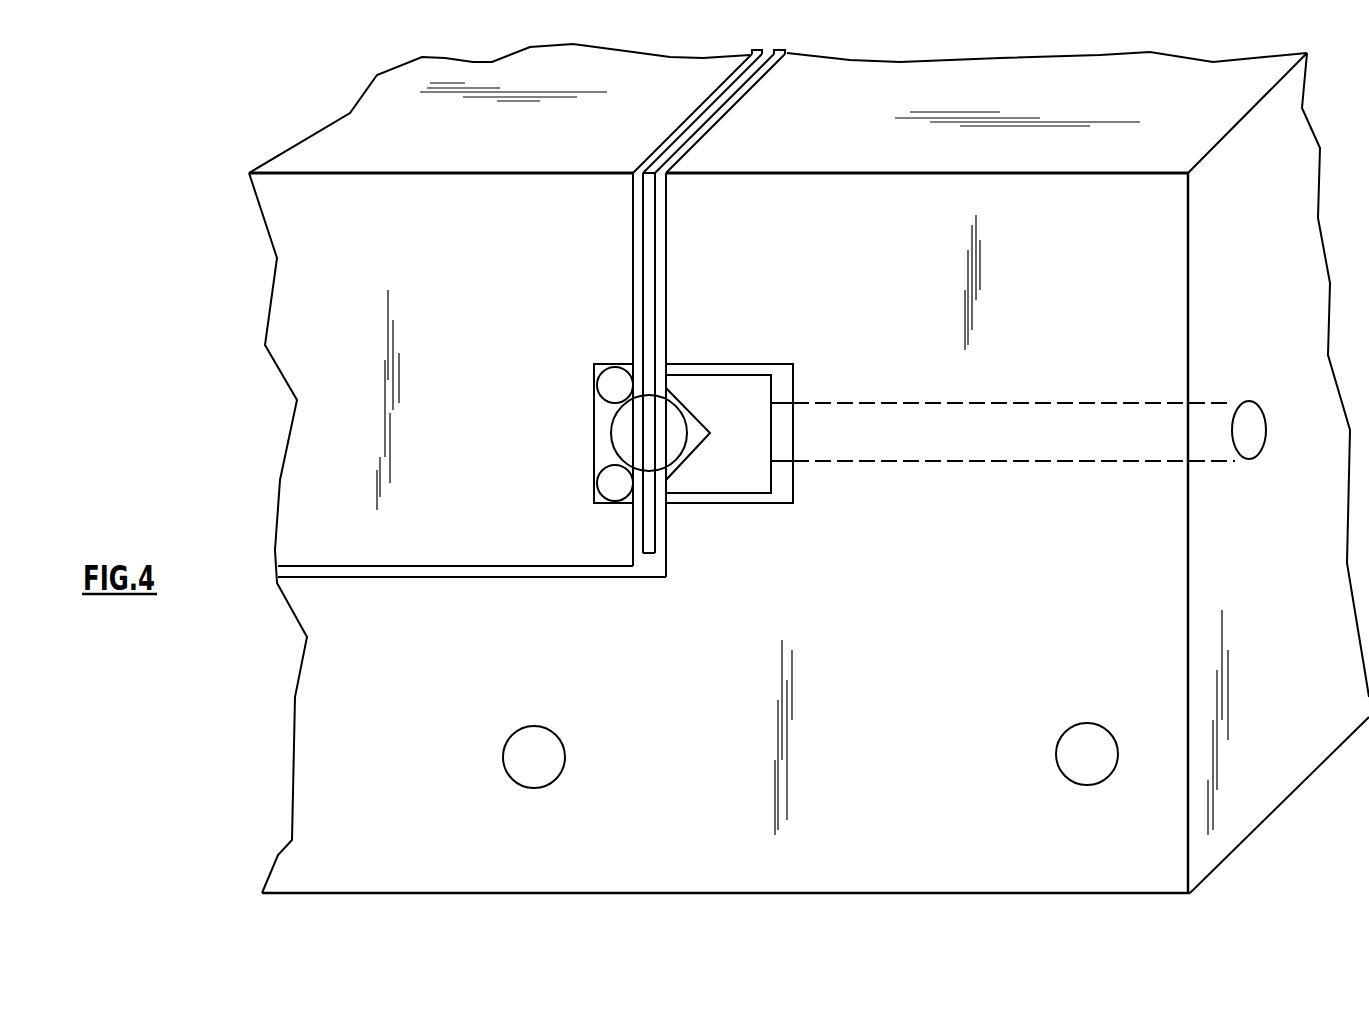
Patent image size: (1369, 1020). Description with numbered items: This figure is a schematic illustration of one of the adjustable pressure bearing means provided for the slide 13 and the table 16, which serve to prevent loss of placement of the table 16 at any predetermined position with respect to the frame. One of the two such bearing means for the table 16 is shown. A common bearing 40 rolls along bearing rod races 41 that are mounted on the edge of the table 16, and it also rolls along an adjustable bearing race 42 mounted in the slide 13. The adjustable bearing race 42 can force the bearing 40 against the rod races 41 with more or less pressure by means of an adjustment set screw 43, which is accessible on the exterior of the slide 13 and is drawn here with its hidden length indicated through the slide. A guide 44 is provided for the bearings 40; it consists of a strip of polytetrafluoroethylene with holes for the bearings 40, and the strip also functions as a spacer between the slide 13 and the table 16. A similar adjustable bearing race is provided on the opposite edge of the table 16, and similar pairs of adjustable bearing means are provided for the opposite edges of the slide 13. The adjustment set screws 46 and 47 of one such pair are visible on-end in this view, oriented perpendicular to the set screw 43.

The slide 13 is at (1079, 587).
The table 16 is at (532, 187).
The bearing 40 is at (668, 418).
The bearing rod races 41 is at (608, 467).
The adjustable bearing race 42 is at (753, 400).
The adjustment set screw 43 is at (940, 412).
The guide 44 is at (649, 286).
The adjustment set screw 46 is at (550, 752).
The adjustment set screw 47 is at (1103, 750).